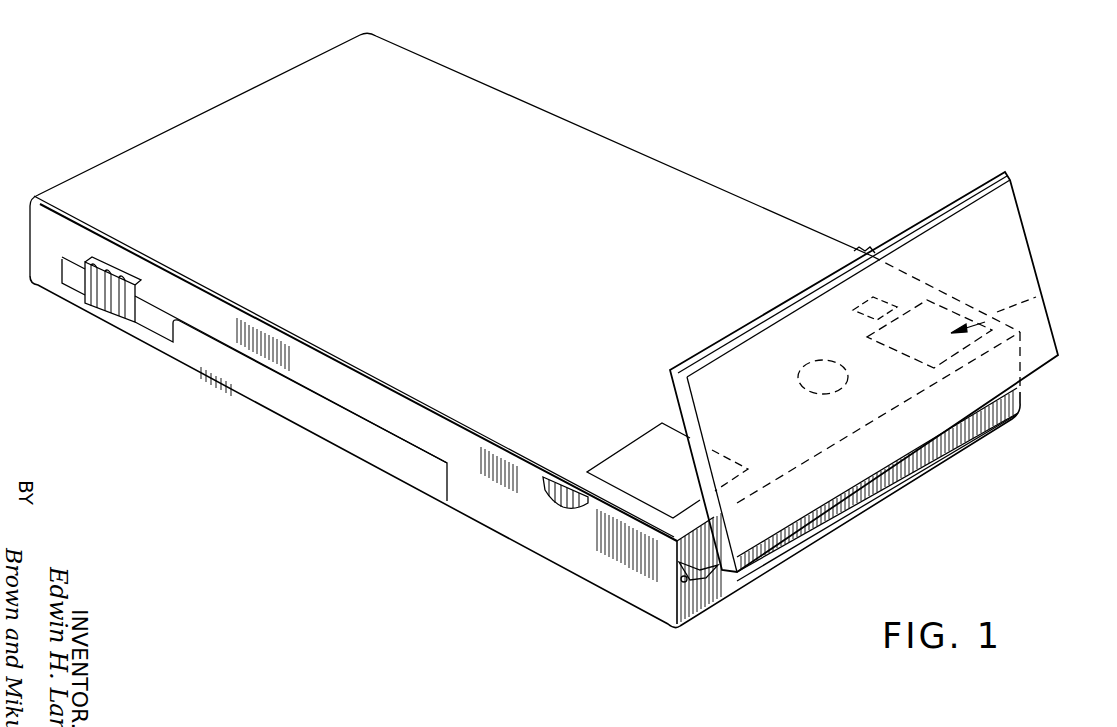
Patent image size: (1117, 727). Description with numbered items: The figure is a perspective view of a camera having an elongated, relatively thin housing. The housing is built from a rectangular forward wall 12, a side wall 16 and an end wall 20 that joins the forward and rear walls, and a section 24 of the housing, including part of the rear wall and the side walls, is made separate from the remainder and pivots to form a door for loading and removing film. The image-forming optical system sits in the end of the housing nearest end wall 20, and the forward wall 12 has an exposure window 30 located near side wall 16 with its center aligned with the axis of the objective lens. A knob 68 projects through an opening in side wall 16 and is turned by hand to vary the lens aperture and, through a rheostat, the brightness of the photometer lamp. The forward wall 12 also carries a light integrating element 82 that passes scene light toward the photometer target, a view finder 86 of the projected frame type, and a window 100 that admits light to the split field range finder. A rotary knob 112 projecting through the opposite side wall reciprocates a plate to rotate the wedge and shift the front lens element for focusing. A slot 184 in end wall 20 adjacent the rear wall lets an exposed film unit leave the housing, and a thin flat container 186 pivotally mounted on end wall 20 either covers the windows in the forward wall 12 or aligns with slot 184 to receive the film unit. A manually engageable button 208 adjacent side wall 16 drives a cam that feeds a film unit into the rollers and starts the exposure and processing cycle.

The forward wall 12 is at (500, 222).
The side wall 16 is at (507, 532).
The end wall 20 is at (705, 620).
The section of the housing 24 is at (302, 413).
The exposure window 30 is at (640, 456).
The knob 68 is at (556, 505).
The light integrating element 82 is at (897, 300).
The view finder 86 is at (1038, 297).
The window 100 is at (813, 356).
The rotary knob 112 is at (861, 248).
The slot 184 is at (833, 523).
The container 186 is at (1012, 254).
The button 208 is at (98, 315).